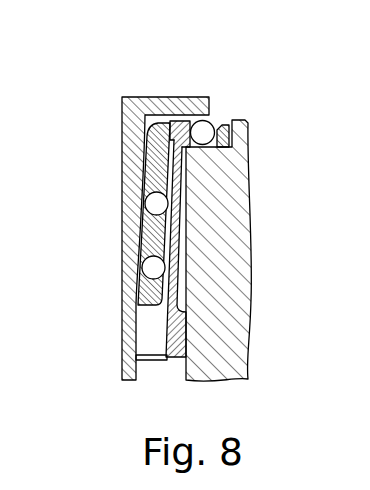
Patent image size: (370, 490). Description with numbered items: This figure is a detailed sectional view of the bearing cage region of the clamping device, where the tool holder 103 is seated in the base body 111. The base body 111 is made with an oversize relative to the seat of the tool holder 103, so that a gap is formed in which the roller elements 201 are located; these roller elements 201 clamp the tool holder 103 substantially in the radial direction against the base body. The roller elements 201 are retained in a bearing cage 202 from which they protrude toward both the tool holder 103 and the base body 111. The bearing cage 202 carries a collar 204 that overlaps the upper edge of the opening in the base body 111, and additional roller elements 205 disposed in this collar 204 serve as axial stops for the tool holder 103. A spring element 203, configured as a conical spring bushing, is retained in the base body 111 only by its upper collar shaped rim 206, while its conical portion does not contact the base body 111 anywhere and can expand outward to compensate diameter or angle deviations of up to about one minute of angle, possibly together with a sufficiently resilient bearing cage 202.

The tool holder 103 is at (168, 108).
The base body 111 is at (188, 369).
The roller elements 201 is at (155, 203).
The bearing cage 202 is at (157, 155).
The spring element 203 is at (173, 242).
The collar 204 is at (177, 130).
The additional roller elements 205 is at (203, 133).
The collar shaped rim 206 is at (221, 142).